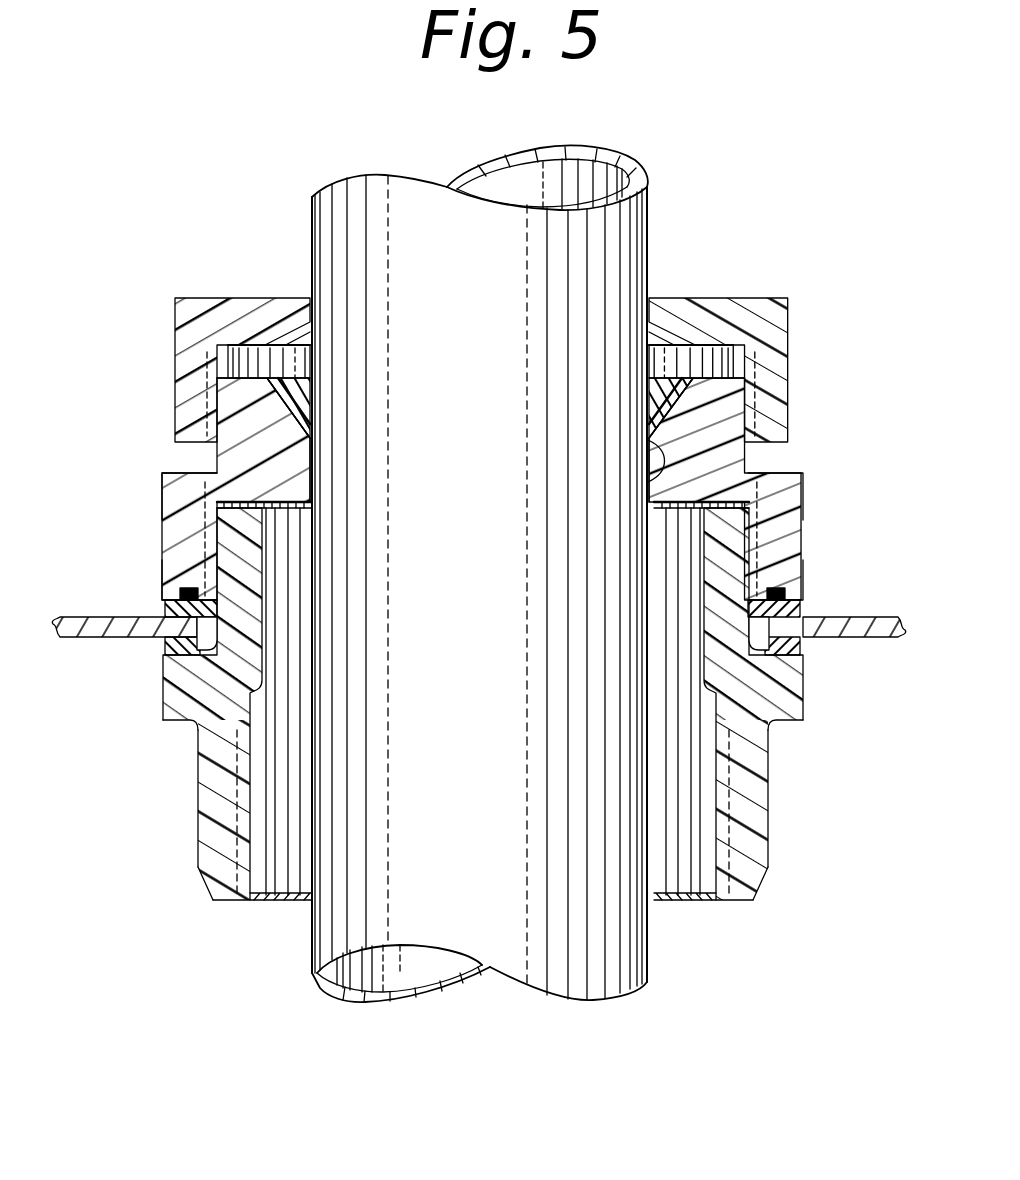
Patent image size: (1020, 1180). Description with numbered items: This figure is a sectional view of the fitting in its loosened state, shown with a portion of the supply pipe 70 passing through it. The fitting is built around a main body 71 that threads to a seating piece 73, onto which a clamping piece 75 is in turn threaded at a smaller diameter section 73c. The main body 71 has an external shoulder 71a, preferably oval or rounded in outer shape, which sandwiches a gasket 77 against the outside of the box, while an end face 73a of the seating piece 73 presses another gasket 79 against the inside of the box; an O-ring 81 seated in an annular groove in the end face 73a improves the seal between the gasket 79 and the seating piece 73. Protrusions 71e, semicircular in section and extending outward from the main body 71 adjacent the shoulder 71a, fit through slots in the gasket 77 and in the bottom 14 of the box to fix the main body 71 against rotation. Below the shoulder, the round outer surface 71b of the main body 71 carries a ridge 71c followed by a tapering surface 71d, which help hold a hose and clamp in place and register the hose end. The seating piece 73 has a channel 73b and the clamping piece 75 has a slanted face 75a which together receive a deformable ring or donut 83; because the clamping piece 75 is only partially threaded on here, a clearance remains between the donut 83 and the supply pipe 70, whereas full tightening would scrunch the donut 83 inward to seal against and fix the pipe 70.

The bottom 14 is at (90, 616).
The supply pipe 70 is at (312, 248).
The main body 71 is at (768, 790).
The external shoulder 71a is at (163, 702).
The outer surface 71b is at (198, 775).
The ridge 71c is at (197, 868).
The tapering surface 71d is at (211, 901).
The protrusions 71e is at (212, 639).
The seating piece 73 is at (805, 542).
The end face 73a is at (793, 590).
The channel 73b is at (648, 478).
The smaller diameter section 73c is at (752, 453).
The clamping piece 75 is at (790, 358).
The slanted face 75a is at (665, 378).
The gasket 77 is at (165, 646).
The gasket 79 is at (166, 606).
The O-ring 81 is at (186, 588).
The deformable ring 83 is at (652, 403).